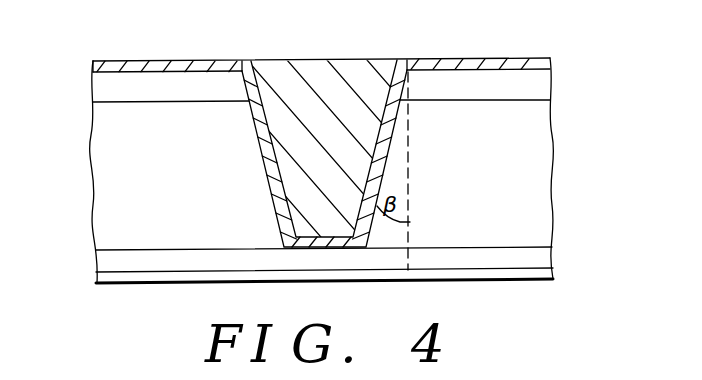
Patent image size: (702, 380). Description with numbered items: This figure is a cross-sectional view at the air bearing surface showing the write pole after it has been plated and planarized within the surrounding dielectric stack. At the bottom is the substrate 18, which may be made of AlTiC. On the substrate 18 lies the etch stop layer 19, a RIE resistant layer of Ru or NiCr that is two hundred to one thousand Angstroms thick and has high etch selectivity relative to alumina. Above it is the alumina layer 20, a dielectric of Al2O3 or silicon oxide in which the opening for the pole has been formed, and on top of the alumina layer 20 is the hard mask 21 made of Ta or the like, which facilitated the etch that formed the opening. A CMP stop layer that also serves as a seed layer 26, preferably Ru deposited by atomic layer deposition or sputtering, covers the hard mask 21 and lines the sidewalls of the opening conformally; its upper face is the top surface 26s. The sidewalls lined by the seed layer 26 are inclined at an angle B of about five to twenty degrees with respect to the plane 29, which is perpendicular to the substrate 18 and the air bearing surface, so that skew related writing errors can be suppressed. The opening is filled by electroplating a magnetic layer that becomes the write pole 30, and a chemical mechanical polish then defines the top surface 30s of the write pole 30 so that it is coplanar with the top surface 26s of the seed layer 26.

The substrate 18 is at (96, 282).
The etch stop layer 19 is at (537, 262).
The alumina layer 20 is at (107, 203).
The hard mask 21 is at (101, 90).
The seed layer 26 is at (550, 62).
The top surface of seed layer 26s is at (100, 63).
The plane 29 is at (409, 128).
The write pole 30 is at (284, 87).
The top surface of write pole 30s is at (337, 60).